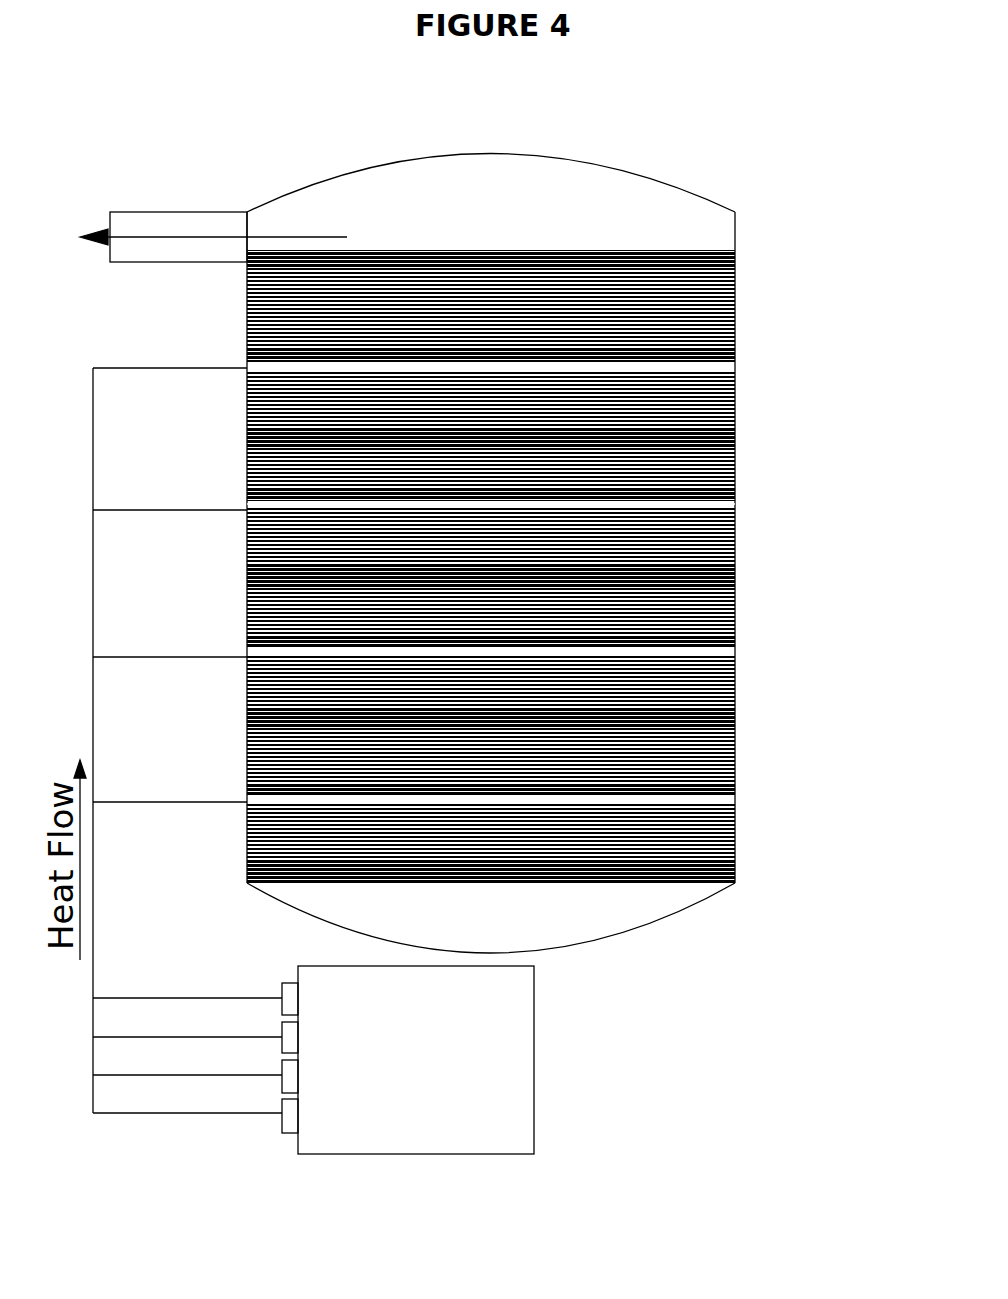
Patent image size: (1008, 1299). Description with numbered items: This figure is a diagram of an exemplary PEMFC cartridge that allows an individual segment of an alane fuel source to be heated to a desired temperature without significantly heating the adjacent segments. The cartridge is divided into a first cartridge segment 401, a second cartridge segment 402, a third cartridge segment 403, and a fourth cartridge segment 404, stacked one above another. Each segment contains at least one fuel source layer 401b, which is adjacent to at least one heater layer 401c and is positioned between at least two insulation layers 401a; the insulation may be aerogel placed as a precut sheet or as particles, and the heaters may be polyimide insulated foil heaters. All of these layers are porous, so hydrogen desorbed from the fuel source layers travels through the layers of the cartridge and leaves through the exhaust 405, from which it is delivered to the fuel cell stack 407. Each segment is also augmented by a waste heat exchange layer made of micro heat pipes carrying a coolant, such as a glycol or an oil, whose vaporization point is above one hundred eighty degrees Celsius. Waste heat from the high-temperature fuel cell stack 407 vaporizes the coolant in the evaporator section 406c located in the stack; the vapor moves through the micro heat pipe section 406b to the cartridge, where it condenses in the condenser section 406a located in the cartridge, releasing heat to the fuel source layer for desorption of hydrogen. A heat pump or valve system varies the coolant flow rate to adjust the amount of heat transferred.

The first cartridge segment 401 is at (509, 329).
The insulation layers 401a is at (748, 262).
The fuel source layers 401b is at (748, 310).
The heater layer 401c is at (748, 355).
The second cartridge segment 402 is at (247, 430).
The third cartridge segment 403 is at (247, 563).
The fourth cartridge segment 404 is at (247, 883).
The exhaust 405 is at (213, 236).
The condenser section 406a is at (748, 513).
The micro heat pipe section 406b is at (175, 740).
The evaporator section 406c is at (272, 1138).
The fuel cell stack 407 is at (416, 1060).